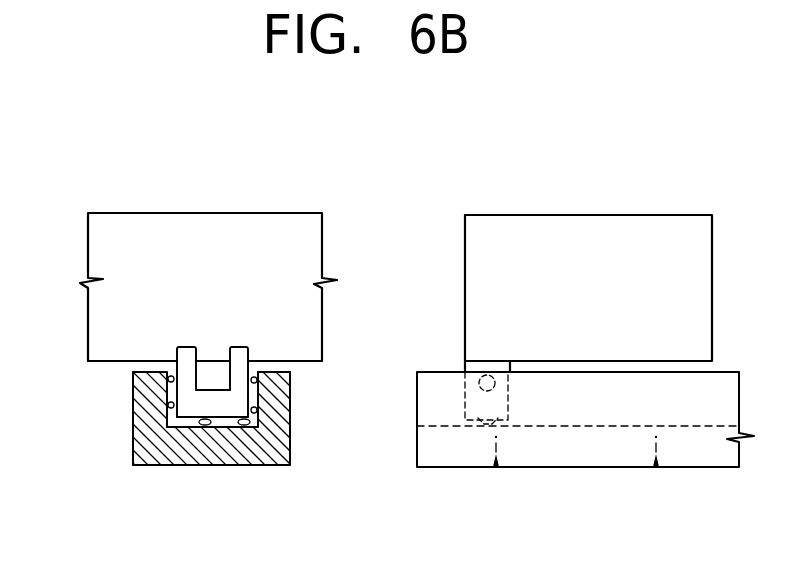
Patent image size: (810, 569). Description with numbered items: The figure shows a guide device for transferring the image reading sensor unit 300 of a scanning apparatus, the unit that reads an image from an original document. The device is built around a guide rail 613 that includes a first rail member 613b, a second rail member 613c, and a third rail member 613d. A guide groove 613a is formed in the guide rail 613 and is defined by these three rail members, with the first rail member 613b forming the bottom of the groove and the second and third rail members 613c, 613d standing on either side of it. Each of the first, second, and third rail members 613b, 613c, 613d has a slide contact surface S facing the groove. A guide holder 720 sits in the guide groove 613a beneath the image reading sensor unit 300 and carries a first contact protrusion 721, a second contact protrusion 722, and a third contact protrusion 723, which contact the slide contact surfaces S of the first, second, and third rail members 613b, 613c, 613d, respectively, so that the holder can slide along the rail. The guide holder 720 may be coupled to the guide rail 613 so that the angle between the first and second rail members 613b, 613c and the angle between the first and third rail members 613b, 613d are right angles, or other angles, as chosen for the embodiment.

The image reading sensor unit 300 is at (465, 213).
The guide rail 613 is at (210, 470).
The guide groove 613a is at (195, 428).
The first rail member 613b is at (267, 458).
The second rail member 613c is at (432, 393).
The third rail member 613d is at (165, 405).
The guide holder 720 is at (252, 342).
The first contact protrusion 721 is at (484, 422).
The second contact protrusion 722 is at (482, 385).
The third contact protrusion 723 is at (172, 376).
The slide contact surfaces S is at (166, 425).